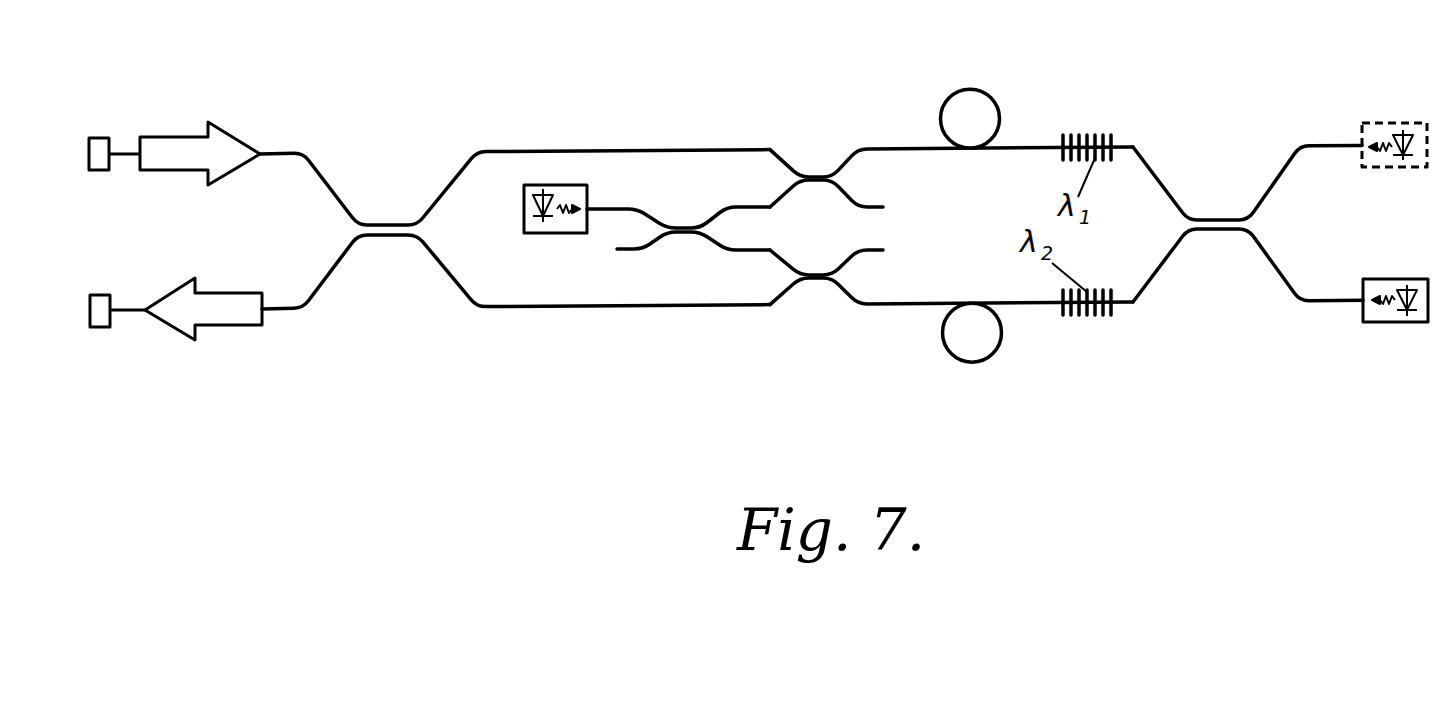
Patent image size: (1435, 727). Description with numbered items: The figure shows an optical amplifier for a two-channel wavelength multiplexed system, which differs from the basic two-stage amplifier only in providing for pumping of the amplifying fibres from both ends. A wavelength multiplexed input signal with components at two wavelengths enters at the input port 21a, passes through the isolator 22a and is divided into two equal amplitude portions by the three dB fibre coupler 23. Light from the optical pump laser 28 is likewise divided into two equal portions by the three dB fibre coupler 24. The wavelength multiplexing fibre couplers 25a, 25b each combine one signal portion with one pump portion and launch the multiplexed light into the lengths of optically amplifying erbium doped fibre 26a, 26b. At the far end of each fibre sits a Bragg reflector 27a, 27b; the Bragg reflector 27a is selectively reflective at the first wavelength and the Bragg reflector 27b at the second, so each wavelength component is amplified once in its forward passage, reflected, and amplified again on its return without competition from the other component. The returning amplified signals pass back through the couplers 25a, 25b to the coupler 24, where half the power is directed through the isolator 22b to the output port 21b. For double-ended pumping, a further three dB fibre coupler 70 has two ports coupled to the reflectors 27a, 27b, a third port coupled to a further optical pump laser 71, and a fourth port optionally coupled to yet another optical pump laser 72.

The input port 21a is at (100, 150).
The output port 21b is at (102, 320).
The isolator 22a is at (170, 150).
The isolator 22b is at (222, 307).
The 3 dB fibre coupler 23 is at (383, 198).
The 3 dB fibre coupler 24 is at (693, 242).
The wavelength multiplexing fibre coupler 25a is at (812, 158).
The wavelength multiplexing fibre coupler 25b is at (818, 298).
The optically amplifying erbium doped fibre 26a is at (978, 90).
The optically amplifying erbium doped fibre 26b is at (947, 348).
The Bragg reflector 27a is at (1085, 137).
The Bragg reflector 27b is at (1097, 315).
The optical pump laser 28 is at (563, 197).
The 3 dB fibre coupler 70 is at (1206, 205).
The optical pump laser 71 is at (1385, 313).
The optical pump laser 72 is at (1383, 130).